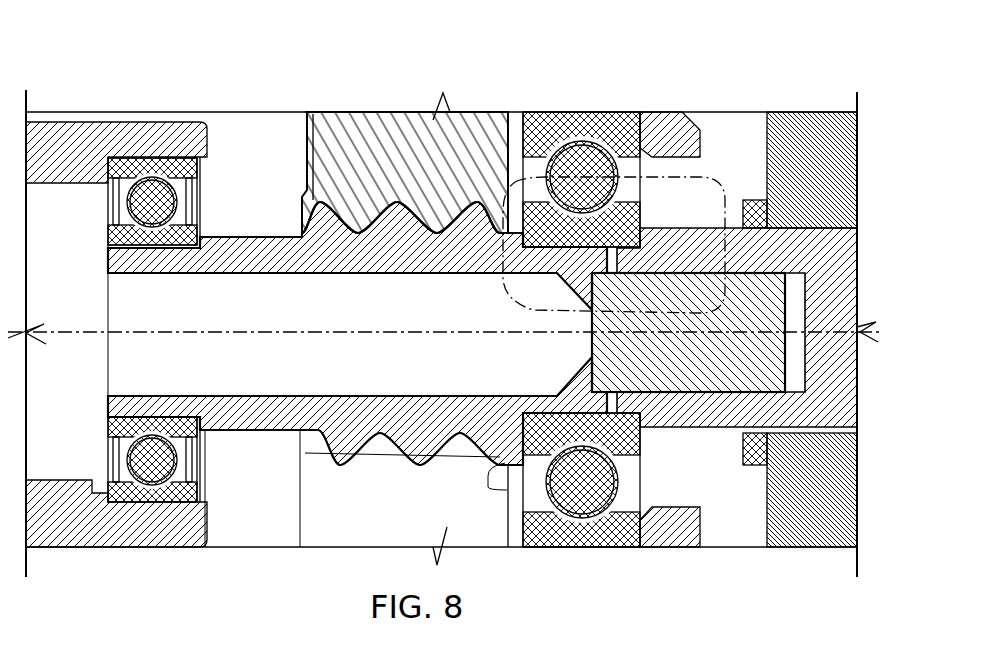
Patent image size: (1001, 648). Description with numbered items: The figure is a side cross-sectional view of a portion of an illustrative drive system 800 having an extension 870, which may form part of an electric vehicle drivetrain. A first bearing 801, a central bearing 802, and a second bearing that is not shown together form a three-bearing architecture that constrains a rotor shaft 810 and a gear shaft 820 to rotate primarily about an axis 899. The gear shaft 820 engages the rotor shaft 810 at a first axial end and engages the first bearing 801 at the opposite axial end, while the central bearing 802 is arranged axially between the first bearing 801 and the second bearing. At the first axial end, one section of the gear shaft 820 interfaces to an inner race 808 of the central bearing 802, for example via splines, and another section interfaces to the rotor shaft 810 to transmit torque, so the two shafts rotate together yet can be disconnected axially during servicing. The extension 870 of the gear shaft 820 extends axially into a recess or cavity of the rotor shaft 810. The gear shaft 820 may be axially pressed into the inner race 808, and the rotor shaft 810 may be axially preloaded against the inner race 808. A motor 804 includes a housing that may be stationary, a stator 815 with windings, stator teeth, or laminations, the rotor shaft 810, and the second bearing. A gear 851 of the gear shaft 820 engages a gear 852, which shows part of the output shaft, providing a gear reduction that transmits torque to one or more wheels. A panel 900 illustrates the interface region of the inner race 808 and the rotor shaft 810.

The drive system 800 is at (462, 42).
The first bearing 801 is at (152, 203).
The central bearing 802 is at (582, 177).
The motor 804 is at (818, 98).
The inner race 808 is at (633, 150).
The rotor shaft 810 is at (837, 267).
The stator 815 is at (837, 196).
The gear shaft 820 is at (268, 446).
The gear 851 is at (363, 262).
The gear 852 is at (372, 152).
The extension 870 is at (755, 364).
The axis 899 is at (82, 330).
The panel 900 is at (720, 186).